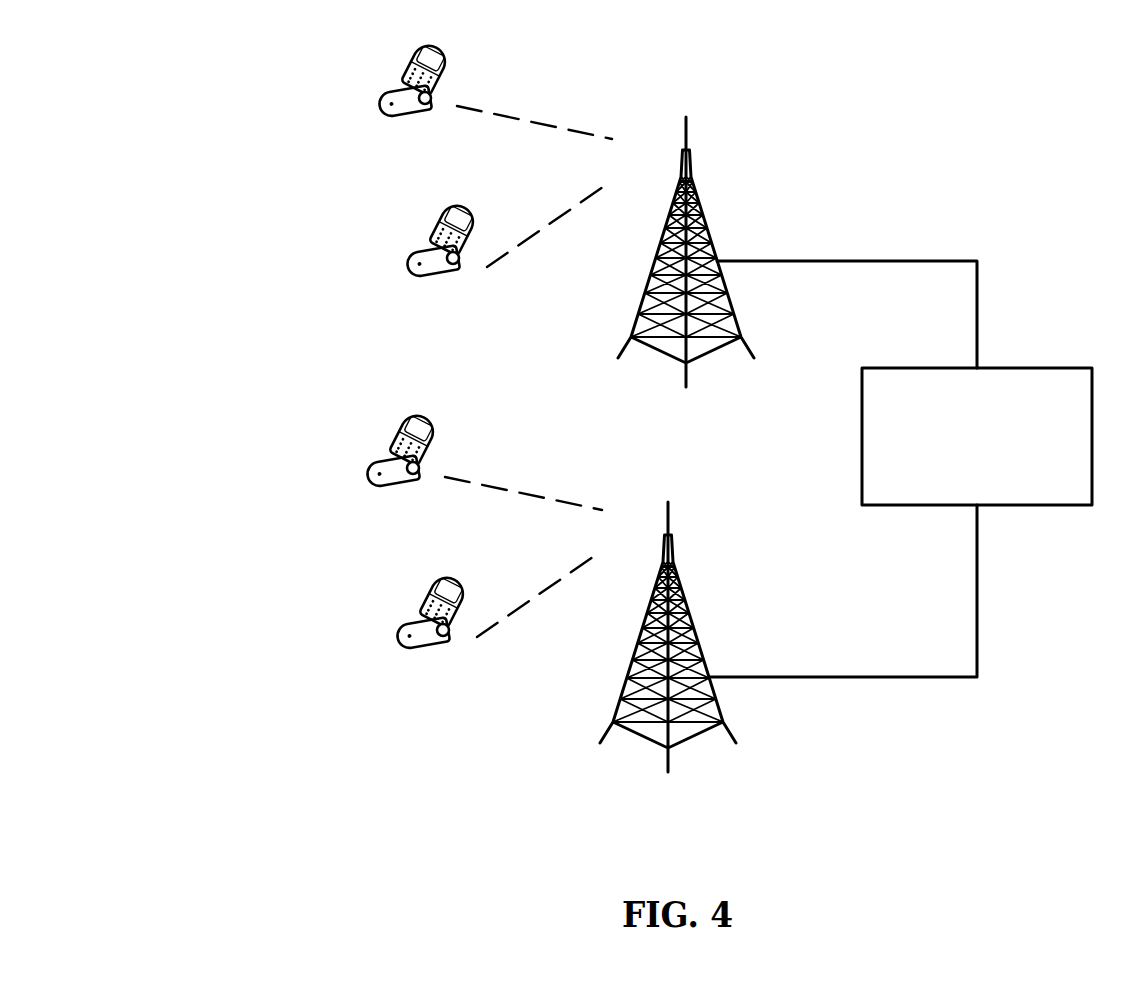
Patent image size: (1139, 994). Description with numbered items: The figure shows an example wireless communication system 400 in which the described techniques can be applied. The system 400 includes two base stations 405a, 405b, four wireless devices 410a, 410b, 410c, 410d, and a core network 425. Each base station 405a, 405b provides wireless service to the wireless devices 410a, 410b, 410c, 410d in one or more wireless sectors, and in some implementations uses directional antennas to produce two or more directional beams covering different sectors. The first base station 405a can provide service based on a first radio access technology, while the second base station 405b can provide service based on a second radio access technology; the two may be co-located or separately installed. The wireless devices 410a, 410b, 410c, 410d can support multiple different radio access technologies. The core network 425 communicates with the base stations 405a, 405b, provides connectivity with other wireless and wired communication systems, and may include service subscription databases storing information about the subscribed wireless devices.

The wireless communication system 400 is at (247, 175).
The first base station 405a is at (797, 260).
The second base station 405b is at (788, 650).
The wireless device 410a is at (495, 76).
The wireless device 410b is at (504, 218).
The wireless device 410c is at (484, 444).
The wireless device 410d is at (494, 594).
The core network 425 is at (977, 415).